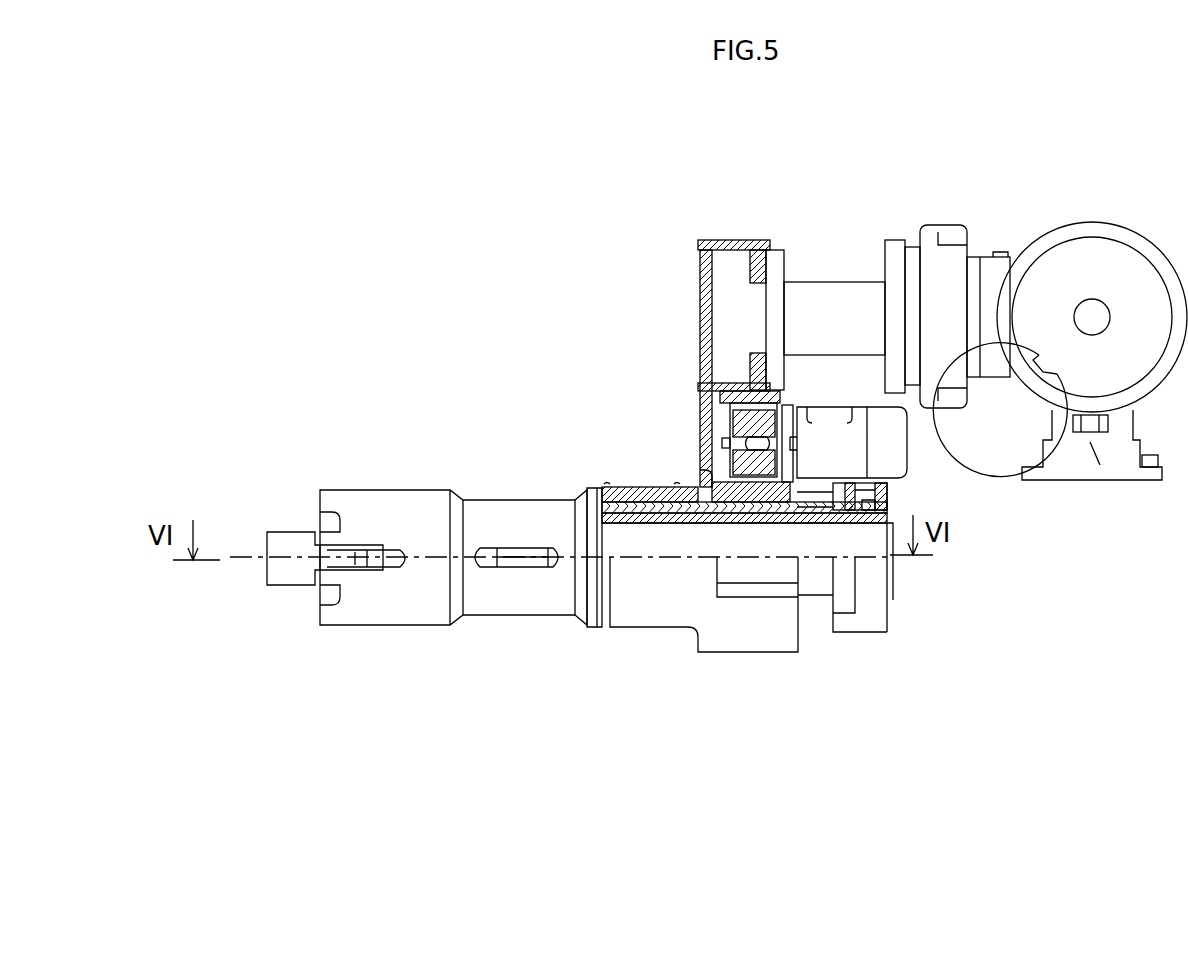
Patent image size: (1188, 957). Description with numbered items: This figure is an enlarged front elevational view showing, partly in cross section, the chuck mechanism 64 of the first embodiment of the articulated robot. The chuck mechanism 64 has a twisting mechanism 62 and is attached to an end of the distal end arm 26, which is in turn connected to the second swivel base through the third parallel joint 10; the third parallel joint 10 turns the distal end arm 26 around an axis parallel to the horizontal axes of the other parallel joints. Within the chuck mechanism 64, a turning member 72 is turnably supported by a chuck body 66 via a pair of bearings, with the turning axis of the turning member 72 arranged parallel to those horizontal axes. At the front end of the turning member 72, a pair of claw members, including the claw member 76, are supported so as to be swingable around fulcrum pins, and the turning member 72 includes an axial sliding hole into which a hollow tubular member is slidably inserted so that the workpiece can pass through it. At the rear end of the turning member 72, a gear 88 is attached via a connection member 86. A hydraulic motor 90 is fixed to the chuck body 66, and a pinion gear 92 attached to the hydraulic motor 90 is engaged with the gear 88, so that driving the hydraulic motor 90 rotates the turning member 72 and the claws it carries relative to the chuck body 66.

The third parallel joint 10 is at (998, 212).
The distal end arm 26 is at (804, 300).
The twisting mechanism 62 is at (921, 511).
The chuck mechanism 64 is at (641, 672).
The chuck body 66 is at (627, 488).
The turning member 72 is at (502, 517).
The claw member 76 is at (288, 542).
The connection member 86 is at (698, 472).
The gear 88 is at (705, 467).
The hydraulic motor 90 is at (855, 445).
The pinion gear 92 is at (730, 392).